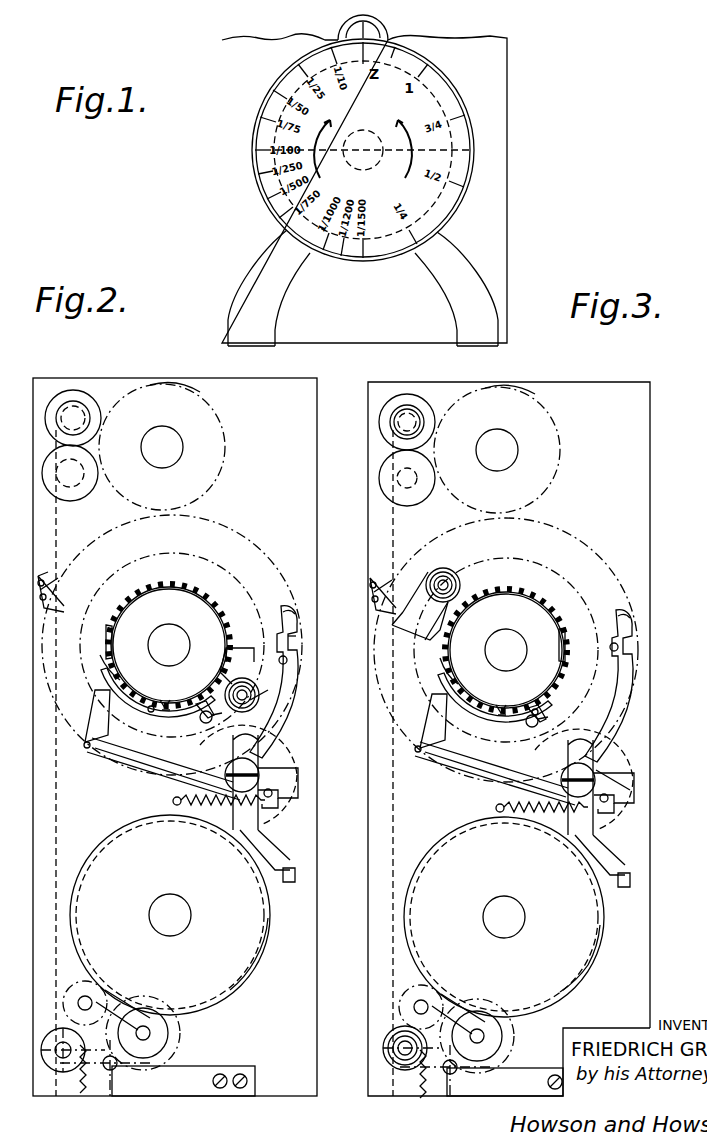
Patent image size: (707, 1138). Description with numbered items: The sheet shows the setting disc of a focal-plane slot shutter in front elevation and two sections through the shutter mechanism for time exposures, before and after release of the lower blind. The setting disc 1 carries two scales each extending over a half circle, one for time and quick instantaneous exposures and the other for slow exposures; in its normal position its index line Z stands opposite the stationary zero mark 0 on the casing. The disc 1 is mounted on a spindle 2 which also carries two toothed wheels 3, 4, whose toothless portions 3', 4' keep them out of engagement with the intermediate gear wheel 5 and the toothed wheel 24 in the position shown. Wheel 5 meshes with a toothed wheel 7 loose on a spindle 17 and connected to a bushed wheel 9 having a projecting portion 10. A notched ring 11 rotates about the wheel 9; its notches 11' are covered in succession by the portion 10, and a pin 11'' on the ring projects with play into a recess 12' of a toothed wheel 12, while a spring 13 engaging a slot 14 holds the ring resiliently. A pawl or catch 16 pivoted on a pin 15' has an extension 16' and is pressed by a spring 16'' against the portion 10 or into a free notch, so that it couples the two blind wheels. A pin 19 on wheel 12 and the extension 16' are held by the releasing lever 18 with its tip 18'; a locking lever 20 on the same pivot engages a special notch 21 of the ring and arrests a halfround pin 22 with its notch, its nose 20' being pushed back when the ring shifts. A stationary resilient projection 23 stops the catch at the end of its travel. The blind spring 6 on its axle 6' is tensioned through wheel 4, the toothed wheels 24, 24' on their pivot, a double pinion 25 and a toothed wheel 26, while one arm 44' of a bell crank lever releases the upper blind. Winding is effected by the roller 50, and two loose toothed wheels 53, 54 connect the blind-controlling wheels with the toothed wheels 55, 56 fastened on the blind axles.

In FIG. 1, the zero mark 0 is at (372, 28).
In FIG. 1, the setting disc 1 is at (430, 105).
In FIG. 1, the spindle 2 is at (470, 150).
In FIG. 2, the spindle 2 is at (182, 902).
In FIG. 3, the spindle 2 is at (513, 902).
In FIG. 2, the toothed wheel 3 is at (166, 915).
In FIG. 3, the toothed wheel 3 is at (504, 917).
In FIG. 2, the toothless portion of toothed wheel 3 3' is at (271, 939).
In FIG. 3, the toothless portion of toothed wheel 3 3' is at (590, 978).
In FIG. 2, the toothed wheel 4 is at (254, 973).
In FIG. 3, the toothed wheel 4 is at (601, 945).
In FIG. 2, the toothless portion of toothed wheel 4 4' is at (170, 913).
In FIG. 3, the toothless portion of toothed wheel 4 4' is at (504, 911).
In FIG. 2, the intermediate gear wheel 5 is at (285, 737).
In FIG. 3, the intermediate gear wheel 5 is at (620, 740).
In FIG. 2, the spring 6 is at (69, 1059).
In FIG. 3, the spring 6 is at (405, 1061).
In FIG. 2, the axle of the spring 6' is at (105, 1068).
In FIG. 3, the axle of the spring 6' is at (445, 1070).
In FIG. 2, the toothed wheel 7 is at (178, 556).
In FIG. 3, the toothed wheel 7 is at (503, 558).
In FIG. 2, the bushed wheel 9 is at (112, 672).
In FIG. 3, the bushed wheel 9 is at (448, 700).
In FIG. 2, the projecting portion 10 is at (108, 633).
In FIG. 3, the projecting portion 10 is at (563, 641).
In FIG. 2, the notched ring 11 is at (166, 645).
In FIG. 3, the notched ring 11 is at (506, 650).
In FIG. 2, the notches 11' is at (169, 634).
In FIG. 3, the notches 11' is at (506, 639).
In FIG. 2, the pin 11'' is at (164, 689).
In FIG. 3, the pin 11'' is at (492, 698).
In FIG. 2, the toothed wheel 12 is at (172, 643).
In FIG. 3, the toothed wheel 12 is at (506, 646).
In FIG. 2, the recess 12' is at (202, 695).
In FIG. 3, the recess 12' is at (535, 701).
In FIG. 2, the spring 13 is at (200, 719).
In FIG. 3, the spring 13 is at (526, 722).
In FIG. 2, the slot 14 is at (152, 712).
In FIG. 3, the slot 14 is at (540, 712).
In FIG. 2, the pin 15' is at (271, 700).
In FIG. 3, the pin 15' is at (448, 569).
In FIG. 2, the pawl or catch 16 is at (239, 651).
In FIG. 3, the pawl or catch 16 is at (420, 636).
In FIG. 2, the extension 16' is at (319, 645).
In FIG. 2, the spring 16'' is at (301, 700).
In FIG. 3, the spring 16'' is at (425, 596).
In FIG. 2, the spindle 17 is at (175, 645).
In FIG. 3, the spindle 17 is at (510, 645).
In FIG. 2, the releasing lever 18 is at (298, 682).
In FIG. 3, the releasing lever 18 is at (633, 686).
In FIG. 2, the release lever tip 18' is at (316, 623).
In FIG. 3, the release lever tip 18' is at (652, 625).
In FIG. 2, the pin 19 is at (288, 660).
In FIG. 3, the pin 19 is at (622, 648).
In FIG. 2, the locking lever 20 is at (163, 769).
In FIG. 3, the locking lever 20 is at (495, 773).
In FIG. 2, the nose 20' is at (85, 716).
In FIG. 3, the nose 20' is at (422, 721).
In FIG. 2, the special notch 21 is at (110, 668).
In FIG. 3, the special notch 21 is at (440, 678).
In FIG. 2, the pin 22 is at (120, 742).
In FIG. 3, the pin 22 is at (445, 748).
In FIG. 2, the stationary resilient projection 23 is at (60, 608).
In FIG. 3, the stationary resilient projection 23 is at (374, 612).
In FIG. 2, the toothed wheel 24 is at (173, 1031).
In FIG. 3, the toothed wheel 24 is at (506, 1035).
In FIG. 2, the toothed wheel 24' is at (171, 1033).
In FIG. 3, the toothed wheel 24' is at (502, 1036).
In FIG. 2, the double pinion 25 is at (90, 985).
In FIG. 3, the double pinion 25 is at (427, 985).
In FIG. 2, the toothed wheel 26 is at (108, 1000).
In FIG. 3, the toothed wheel 26 is at (445, 1000).
In FIG. 2, the lever arm 44' is at (274, 802).
In FIG. 3, the lever arm 44' is at (609, 807).
In FIG. 2, the roller 50 is at (180, 442).
In FIG. 3, the roller 50 is at (515, 447).
In FIG. 2, the loose toothed wheel 53 is at (168, 384).
In FIG. 3, the loose toothed wheel 53 is at (526, 390).
In FIG. 2, the loose toothed wheel 54 is at (180, 386).
In FIG. 3, the loose toothed wheel 54 is at (546, 402).
In FIG. 2, the toothed wheel 55 is at (73, 390).
In FIG. 3, the toothed wheel 55 is at (405, 395).
In FIG. 2, the toothed wheel 56 is at (48, 460).
In FIG. 3, the toothed wheel 56 is at (385, 465).